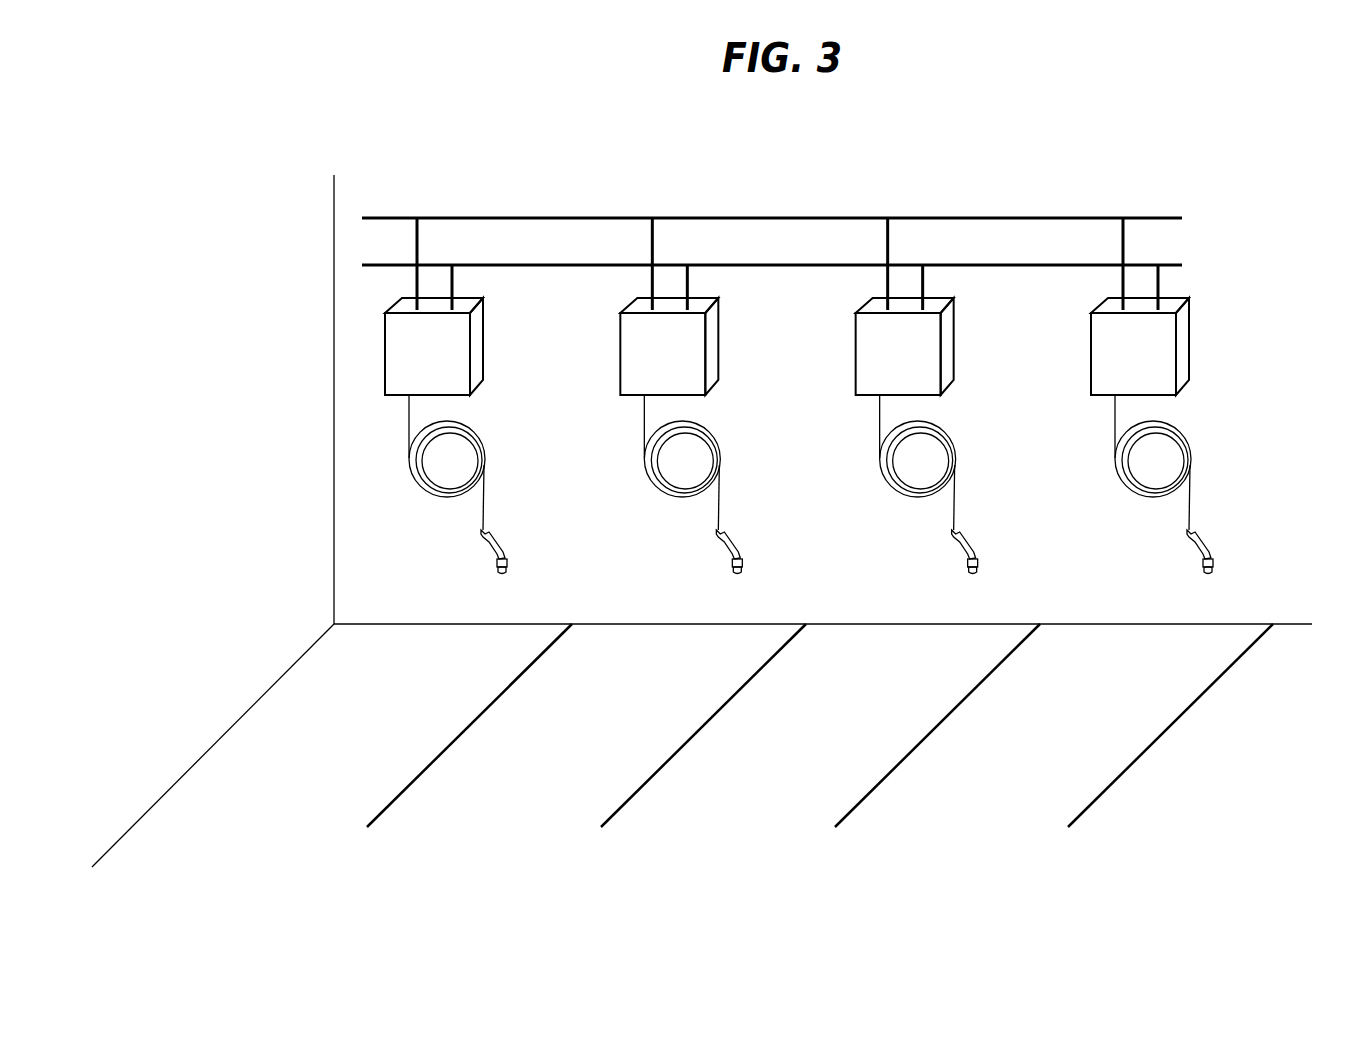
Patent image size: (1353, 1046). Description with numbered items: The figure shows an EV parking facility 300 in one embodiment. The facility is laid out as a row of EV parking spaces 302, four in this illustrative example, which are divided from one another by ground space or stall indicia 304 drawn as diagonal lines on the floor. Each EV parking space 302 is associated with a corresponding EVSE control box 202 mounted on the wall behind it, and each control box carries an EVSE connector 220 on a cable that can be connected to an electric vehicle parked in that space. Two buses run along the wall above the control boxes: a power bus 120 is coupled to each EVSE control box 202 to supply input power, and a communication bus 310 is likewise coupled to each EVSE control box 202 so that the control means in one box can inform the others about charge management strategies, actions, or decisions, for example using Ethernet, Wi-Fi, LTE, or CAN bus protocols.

The parking facility 300 is at (672, 882).
The power bus 120 is at (790, 216).
The communication bus 310 is at (1043, 262).
The EVSE control box 202 is at (408, 367).
The EVSE connector 220 is at (512, 560).
The stall indicia 304 is at (499, 697).
The EV parking space 302 is at (291, 810).